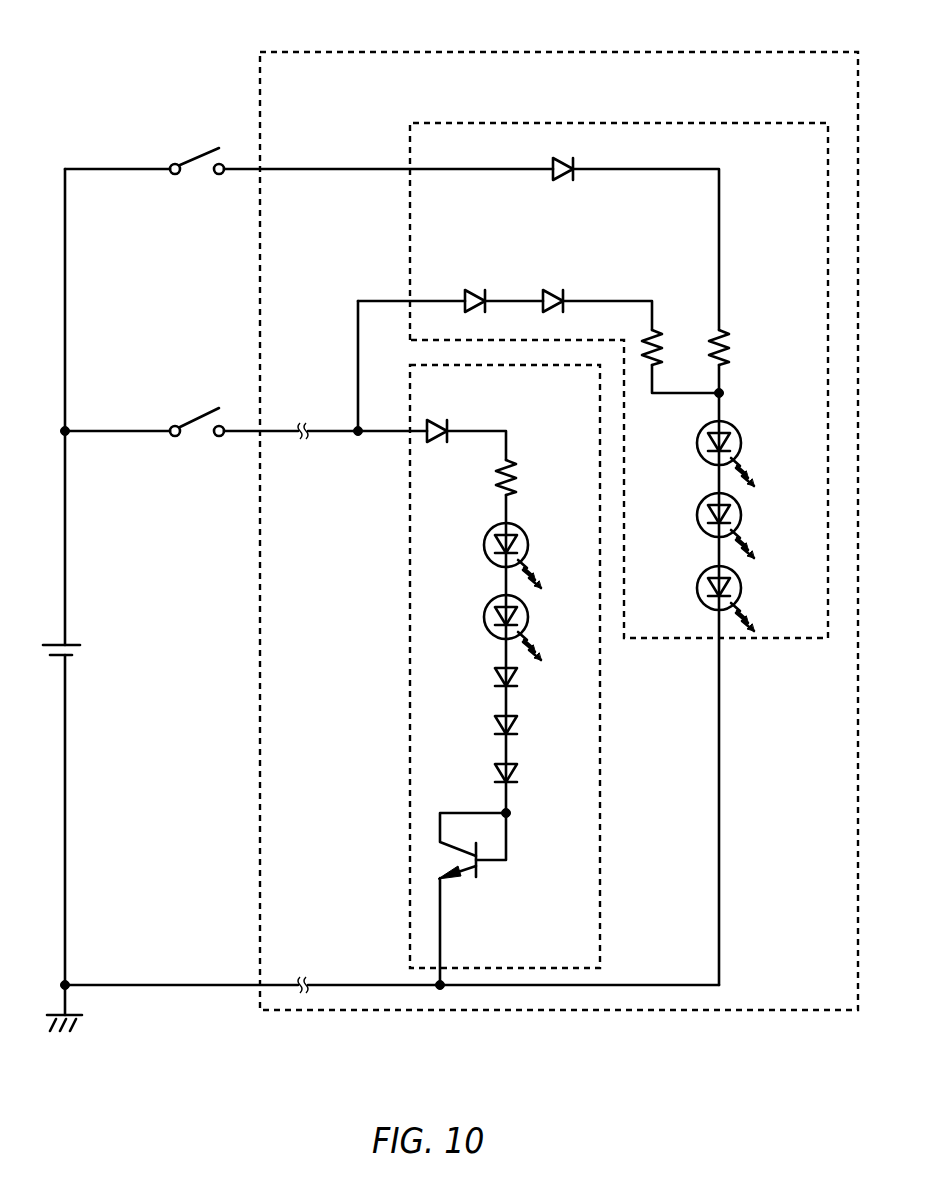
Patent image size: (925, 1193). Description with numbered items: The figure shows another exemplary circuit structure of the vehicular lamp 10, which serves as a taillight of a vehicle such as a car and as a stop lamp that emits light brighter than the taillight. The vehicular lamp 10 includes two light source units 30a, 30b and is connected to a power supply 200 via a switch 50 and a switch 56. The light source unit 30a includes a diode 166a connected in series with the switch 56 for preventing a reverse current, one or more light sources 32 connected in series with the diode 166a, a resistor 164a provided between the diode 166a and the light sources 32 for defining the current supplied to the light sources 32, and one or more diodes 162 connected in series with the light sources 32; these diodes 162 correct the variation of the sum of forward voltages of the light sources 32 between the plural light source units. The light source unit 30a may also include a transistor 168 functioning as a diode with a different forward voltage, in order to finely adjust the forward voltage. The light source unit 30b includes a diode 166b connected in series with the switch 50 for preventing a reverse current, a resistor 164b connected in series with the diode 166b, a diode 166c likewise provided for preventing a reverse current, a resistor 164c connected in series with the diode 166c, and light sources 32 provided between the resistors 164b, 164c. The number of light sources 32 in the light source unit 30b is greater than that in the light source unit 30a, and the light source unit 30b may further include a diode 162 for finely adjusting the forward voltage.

The vehicular lamp 10 is at (487, 52).
The light source unit 30a is at (600, 760).
The light source unit 30b is at (618, 123).
The light source 32 is at (697, 440).
The switch 50 is at (193, 172).
The switch 56 is at (195, 408).
The diode 162 is at (553, 290).
The resistor 164a is at (548, 442).
The resistor 164b is at (731, 346).
The resistor 164c is at (658, 330).
The diode 166a is at (436, 420).
The diode 166b is at (565, 180).
The diode 166c is at (476, 290).
The transistor 168 is at (463, 882).
The power supply 200 is at (56, 640).